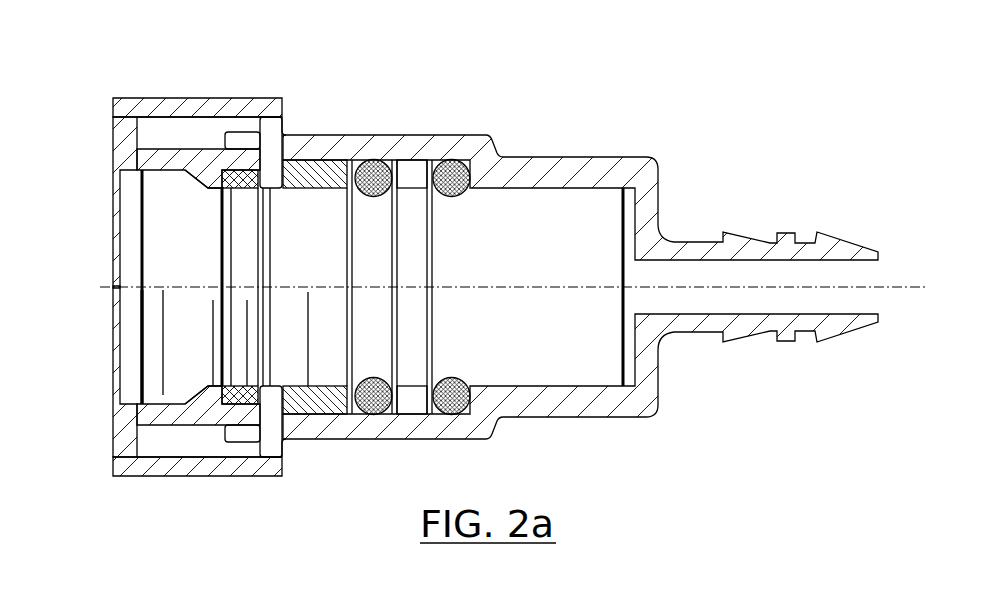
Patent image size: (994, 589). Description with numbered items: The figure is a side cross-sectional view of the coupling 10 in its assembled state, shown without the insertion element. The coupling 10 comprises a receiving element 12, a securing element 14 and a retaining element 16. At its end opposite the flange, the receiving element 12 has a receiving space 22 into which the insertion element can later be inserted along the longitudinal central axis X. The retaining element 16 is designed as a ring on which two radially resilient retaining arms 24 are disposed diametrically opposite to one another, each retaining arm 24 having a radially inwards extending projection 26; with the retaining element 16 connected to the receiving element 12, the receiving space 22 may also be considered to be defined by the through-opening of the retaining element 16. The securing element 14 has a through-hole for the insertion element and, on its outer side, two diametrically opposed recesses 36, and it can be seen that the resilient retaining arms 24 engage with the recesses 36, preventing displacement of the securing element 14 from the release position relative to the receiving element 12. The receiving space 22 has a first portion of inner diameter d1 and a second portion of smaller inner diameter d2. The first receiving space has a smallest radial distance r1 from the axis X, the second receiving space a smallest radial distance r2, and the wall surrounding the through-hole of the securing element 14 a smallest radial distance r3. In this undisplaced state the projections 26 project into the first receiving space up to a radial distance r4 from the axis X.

The coupling 10 is at (146, 66).
The receiving element 12 is at (645, 395).
The securing element 14 is at (257, 167).
The retaining element 16 is at (127, 133).
The receiving space 22 is at (137, 197).
The retaining arms 24 is at (173, 160).
The projection 26 is at (210, 173).
The recesses 36 is at (245, 172).
The inner diameter of the first receiving space d1 is at (140, 370).
The inner diameter of the second receiving space d2 is at (623, 218).
The smallest radial distance of the first receiving space r1 is at (163, 392).
The smallest radial distance of the second receiving space r2 is at (308, 343).
The smallest radial distance of the through-hole wall r3 is at (247, 385).
The radial distance of the projections r4 is at (217, 385).
The longitudinal central axis X is at (825, 290).